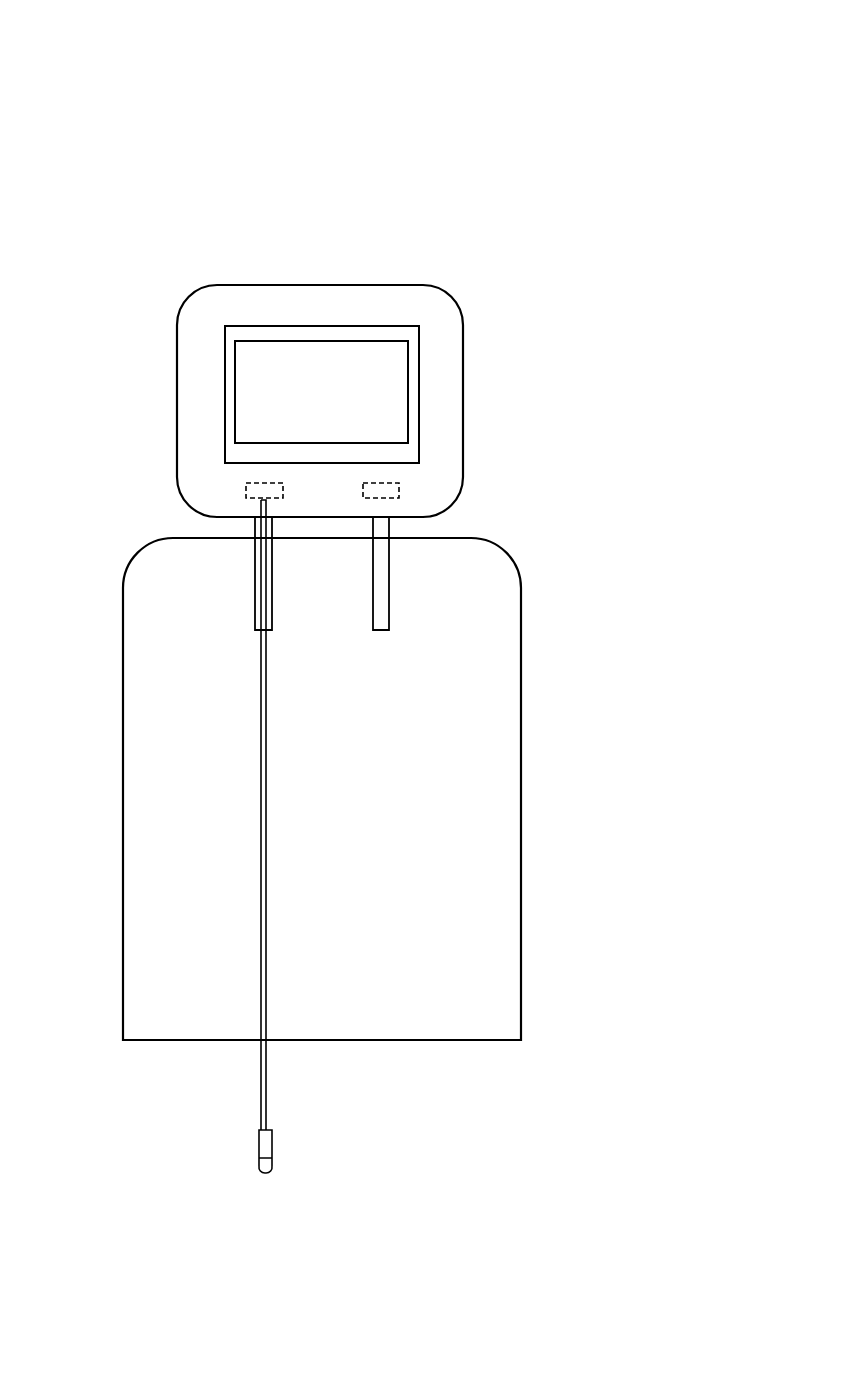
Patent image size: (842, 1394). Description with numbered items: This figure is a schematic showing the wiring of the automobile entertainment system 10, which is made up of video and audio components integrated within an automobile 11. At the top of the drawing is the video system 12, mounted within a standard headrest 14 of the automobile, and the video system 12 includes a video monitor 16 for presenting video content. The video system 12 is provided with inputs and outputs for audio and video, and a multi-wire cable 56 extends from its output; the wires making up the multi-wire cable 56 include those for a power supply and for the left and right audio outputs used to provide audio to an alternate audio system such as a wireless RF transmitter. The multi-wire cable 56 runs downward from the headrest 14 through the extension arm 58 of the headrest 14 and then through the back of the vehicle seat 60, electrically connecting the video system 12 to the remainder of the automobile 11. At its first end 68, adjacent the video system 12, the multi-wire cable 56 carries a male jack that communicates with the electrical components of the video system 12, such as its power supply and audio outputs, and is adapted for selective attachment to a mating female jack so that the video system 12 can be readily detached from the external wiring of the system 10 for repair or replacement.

The automobile entertainment system 10 is at (357, 179).
The automobile 11 is at (180, 1110).
The video system 12 is at (233, 292).
The headrest 14 is at (453, 413).
The video monitor 16 is at (247, 400).
The multi-wire cable 56 is at (267, 826).
The extension arm 58 is at (254, 612).
The vehicle seat 60 is at (497, 765).
The first end 68 is at (246, 490).